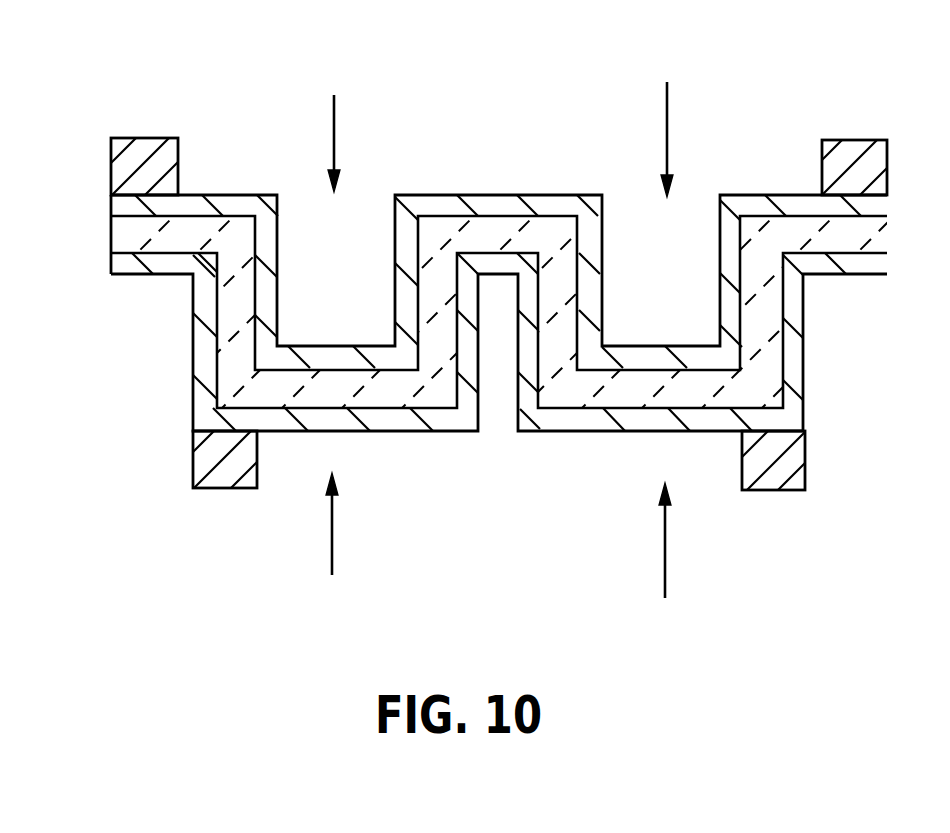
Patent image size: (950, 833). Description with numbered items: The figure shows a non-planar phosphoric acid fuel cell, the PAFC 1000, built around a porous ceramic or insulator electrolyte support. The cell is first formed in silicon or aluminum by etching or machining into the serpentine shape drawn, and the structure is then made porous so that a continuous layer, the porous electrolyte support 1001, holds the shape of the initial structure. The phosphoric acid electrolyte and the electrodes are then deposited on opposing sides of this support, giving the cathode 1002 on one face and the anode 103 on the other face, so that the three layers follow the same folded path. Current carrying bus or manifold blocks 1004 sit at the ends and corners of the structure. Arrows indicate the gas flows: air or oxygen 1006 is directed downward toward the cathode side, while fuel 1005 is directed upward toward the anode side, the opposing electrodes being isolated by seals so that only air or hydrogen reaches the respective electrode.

The PAFC 1000 is at (475, 416).
The porous electrolyte support 1001 is at (127, 232).
The cathode 1002 is at (515, 195).
The anode 103 is at (557, 432).
The current carrying bus or manifold 1004 is at (148, 136).
The fuel 1005 is at (337, 548).
The air or oxygen 1006 is at (337, 125).